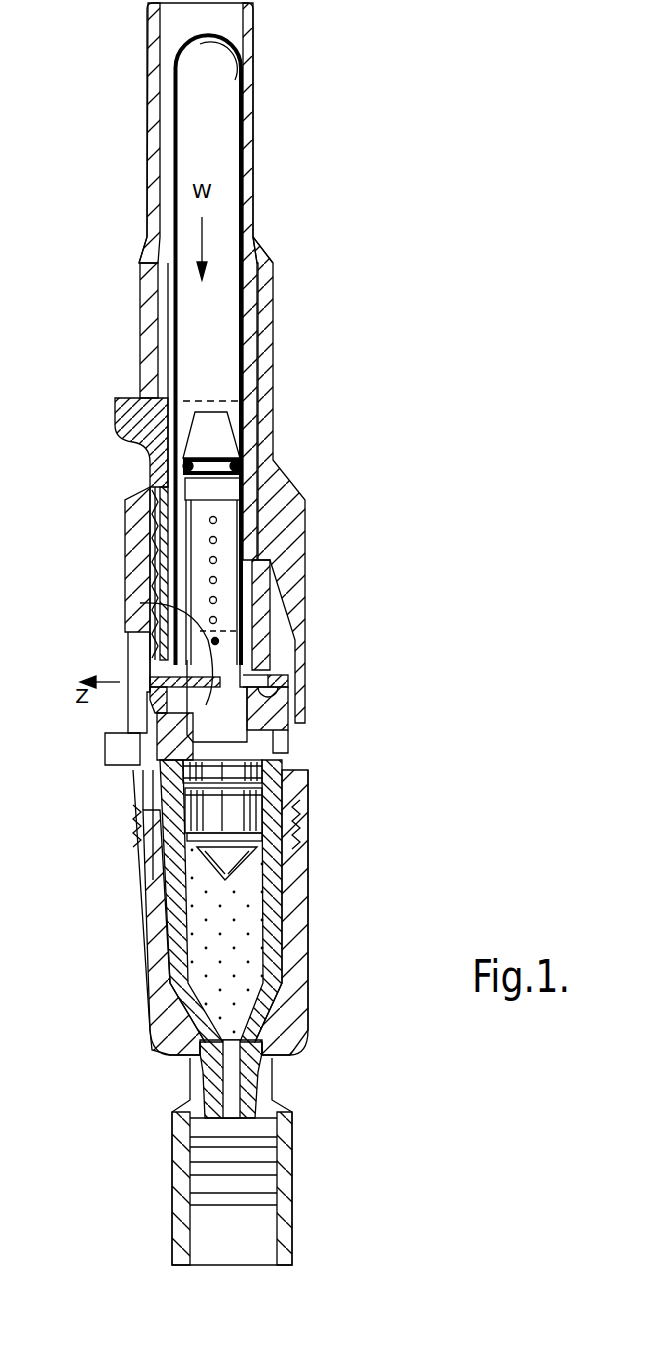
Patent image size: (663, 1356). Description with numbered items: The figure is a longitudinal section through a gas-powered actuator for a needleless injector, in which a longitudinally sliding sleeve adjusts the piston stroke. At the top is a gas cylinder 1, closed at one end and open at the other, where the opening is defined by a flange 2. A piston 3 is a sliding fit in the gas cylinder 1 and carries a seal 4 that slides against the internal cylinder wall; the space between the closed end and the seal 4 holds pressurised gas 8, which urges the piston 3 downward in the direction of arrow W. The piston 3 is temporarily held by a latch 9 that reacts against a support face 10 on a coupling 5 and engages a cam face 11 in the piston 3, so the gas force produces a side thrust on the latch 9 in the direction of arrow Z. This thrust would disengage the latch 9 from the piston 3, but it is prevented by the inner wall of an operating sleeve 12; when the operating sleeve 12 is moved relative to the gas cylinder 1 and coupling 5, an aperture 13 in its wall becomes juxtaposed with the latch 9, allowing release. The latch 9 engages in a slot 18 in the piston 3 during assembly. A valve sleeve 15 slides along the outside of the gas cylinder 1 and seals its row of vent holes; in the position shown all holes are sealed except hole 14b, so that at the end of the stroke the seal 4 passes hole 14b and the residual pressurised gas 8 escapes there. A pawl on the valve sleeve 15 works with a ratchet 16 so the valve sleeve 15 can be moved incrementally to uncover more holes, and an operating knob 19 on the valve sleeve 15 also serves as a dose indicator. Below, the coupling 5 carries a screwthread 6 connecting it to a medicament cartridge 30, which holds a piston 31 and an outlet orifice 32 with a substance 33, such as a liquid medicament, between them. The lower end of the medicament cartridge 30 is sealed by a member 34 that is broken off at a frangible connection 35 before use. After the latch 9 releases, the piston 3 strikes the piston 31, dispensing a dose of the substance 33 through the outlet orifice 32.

The gas cylinder 1 is at (172, 55).
The pressurised gas 8 is at (203, 112).
The operating knob 19 is at (125, 413).
The piston 3 is at (215, 432).
The seal 4 is at (237, 453).
The hole 14b is at (219, 641).
The valve sleeve 15 is at (258, 507).
The operating sleeve 12 is at (137, 590).
The ratchet 16 is at (158, 564).
The cam face 11 is at (140, 603).
The aperture 13 is at (137, 662).
The flange 2 is at (272, 665).
The support face 10 is at (285, 697).
The latch 9 is at (150, 703).
The coupling 5 is at (268, 712).
The slot 18 is at (198, 750).
The medicament cartridge 30 is at (266, 773).
The outlet orifice 32 is at (252, 1038).
The piston 31 is at (243, 810).
The screwthread 6 is at (310, 821).
The substance 33 is at (252, 933).
The frangible connection 35 is at (265, 1055).
The member 34 is at (282, 1128).